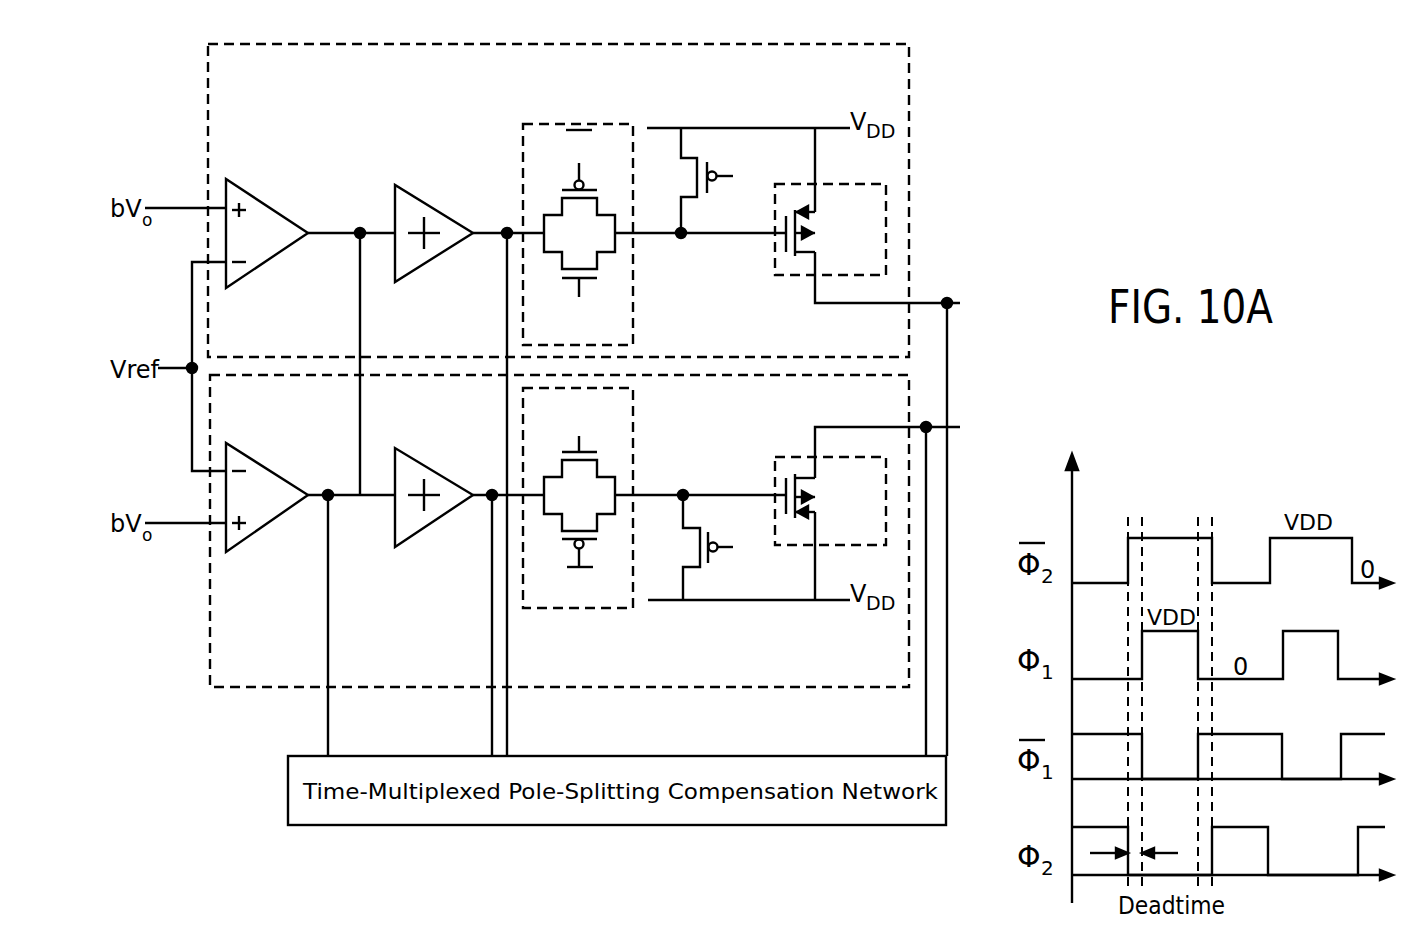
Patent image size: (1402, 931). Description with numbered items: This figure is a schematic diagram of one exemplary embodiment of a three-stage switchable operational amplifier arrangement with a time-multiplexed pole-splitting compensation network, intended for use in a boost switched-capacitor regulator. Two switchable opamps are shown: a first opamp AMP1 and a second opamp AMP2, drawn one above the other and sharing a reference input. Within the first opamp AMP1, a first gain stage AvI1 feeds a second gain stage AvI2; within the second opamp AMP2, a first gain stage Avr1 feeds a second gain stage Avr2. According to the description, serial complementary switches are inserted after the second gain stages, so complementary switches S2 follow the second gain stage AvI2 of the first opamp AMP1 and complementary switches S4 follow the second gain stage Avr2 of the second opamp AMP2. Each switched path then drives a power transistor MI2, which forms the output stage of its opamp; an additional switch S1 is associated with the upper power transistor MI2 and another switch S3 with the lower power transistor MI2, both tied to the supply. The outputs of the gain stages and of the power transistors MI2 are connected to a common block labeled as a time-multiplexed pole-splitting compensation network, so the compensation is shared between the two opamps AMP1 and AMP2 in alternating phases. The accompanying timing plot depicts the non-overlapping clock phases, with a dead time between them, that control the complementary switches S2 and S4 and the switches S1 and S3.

The first amplifier AMP1 is at (558, 200).
The second amplifier AMP2 is at (559, 531).
The first gain stage of AMP1 AvI1 is at (274, 233).
The second gain stage of AMP1 AvI2 is at (446, 233).
The first gain stage of AMP2 Avr1 is at (272, 504).
The second gain stage of AMP2 Avr2 is at (441, 507).
The switch S1 is at (709, 180).
The complementary switches S2 is at (583, 200).
The switch S3 is at (711, 547).
The complementary switches S4 is at (608, 531).
The power transistor MI2 is at (807, 442).